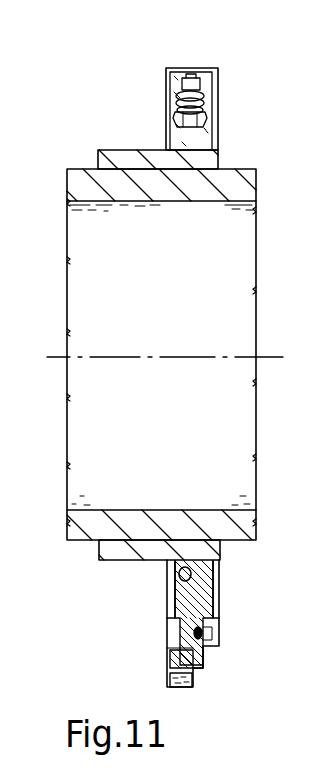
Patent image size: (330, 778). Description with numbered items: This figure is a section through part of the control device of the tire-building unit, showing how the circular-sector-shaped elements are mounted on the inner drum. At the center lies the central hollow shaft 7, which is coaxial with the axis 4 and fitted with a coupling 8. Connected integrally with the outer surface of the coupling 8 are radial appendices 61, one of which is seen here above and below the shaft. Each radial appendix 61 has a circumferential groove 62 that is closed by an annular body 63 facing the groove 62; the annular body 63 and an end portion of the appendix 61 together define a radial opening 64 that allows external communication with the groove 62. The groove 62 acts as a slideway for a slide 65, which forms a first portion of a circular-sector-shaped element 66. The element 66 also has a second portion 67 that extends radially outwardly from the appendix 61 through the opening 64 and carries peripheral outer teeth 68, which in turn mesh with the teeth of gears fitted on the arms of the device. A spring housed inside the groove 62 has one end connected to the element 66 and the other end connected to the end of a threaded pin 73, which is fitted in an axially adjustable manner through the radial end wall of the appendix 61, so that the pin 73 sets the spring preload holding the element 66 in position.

The axis 4 is at (266, 357).
The central hollow shaft 7 is at (242, 187).
The coupling 8 is at (132, 158).
The radial appendix 61 is at (222, 102).
The circumferential groove 62 is at (180, 575).
The annular body 63 is at (217, 593).
The radial opening 64 is at (202, 657).
The slide 65 is at (198, 572).
The circular-sector-shaped element 66 is at (199, 668).
The second portion 67 is at (172, 668).
The peripheral outer teeth 68 is at (182, 687).
The threaded pin 73 is at (174, 101).